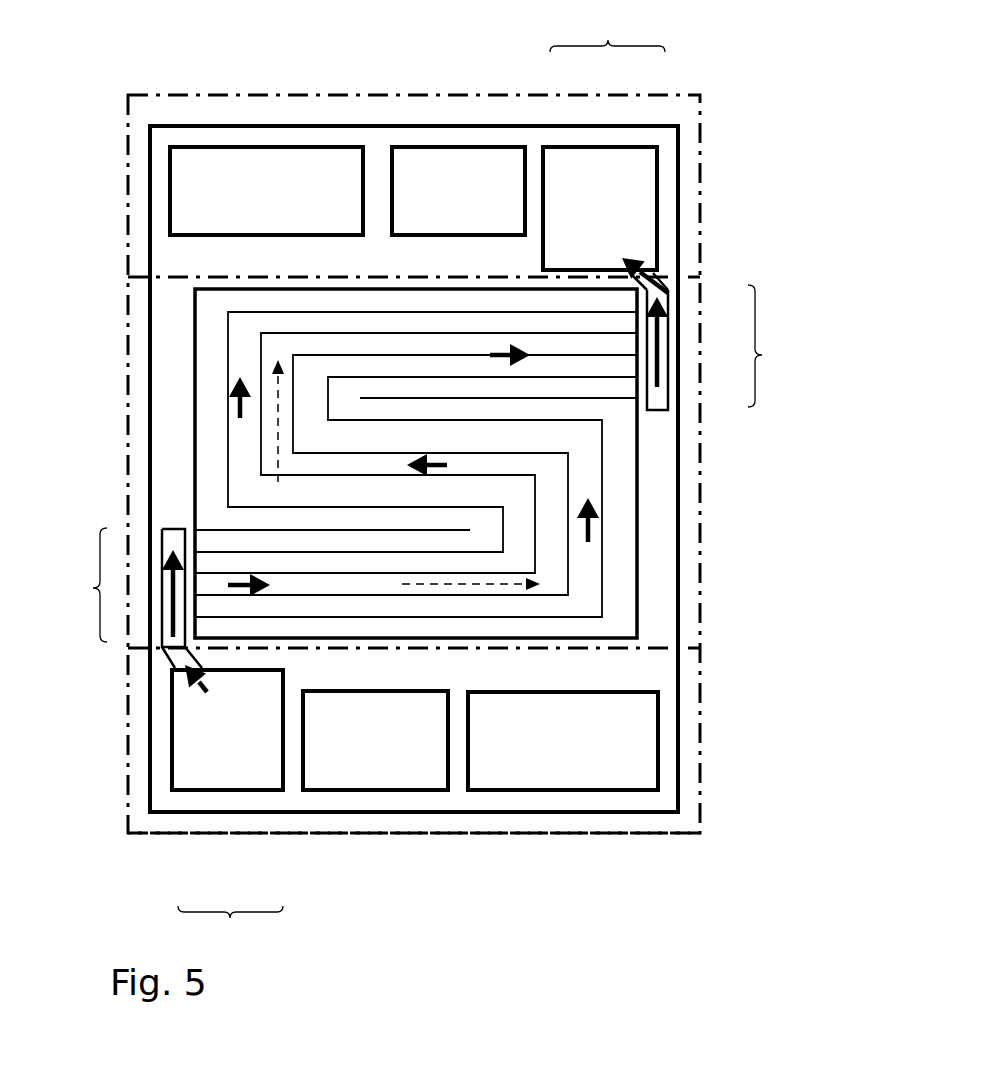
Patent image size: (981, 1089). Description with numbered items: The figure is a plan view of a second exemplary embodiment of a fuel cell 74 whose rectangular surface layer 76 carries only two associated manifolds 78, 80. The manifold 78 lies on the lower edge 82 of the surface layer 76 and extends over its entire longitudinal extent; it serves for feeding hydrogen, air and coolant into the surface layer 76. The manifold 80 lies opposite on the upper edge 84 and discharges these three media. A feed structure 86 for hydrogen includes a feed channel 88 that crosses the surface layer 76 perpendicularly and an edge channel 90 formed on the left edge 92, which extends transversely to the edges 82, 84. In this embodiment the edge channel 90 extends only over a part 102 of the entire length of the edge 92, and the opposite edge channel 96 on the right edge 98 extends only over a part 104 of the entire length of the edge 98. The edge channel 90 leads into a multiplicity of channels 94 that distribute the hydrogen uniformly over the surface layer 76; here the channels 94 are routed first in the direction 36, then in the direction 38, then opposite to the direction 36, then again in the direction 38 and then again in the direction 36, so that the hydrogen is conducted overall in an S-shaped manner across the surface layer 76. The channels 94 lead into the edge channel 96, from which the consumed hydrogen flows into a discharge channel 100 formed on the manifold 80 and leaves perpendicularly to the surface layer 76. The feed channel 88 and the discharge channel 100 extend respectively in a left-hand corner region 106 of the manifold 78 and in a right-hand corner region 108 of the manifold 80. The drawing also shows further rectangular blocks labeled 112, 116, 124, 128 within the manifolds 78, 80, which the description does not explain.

The fuel cell 74 is at (80, 103).
The surface layer 76 is at (128, 369).
The manifold 78 is at (390, 840).
The manifold 80 is at (425, 95).
The lower edge 82 is at (624, 648).
The upper edge 84 is at (215, 288).
The feed structure 86 is at (158, 700).
The feed channel 88 is at (212, 757).
The edge channel 90 is at (168, 540).
The edge 92 is at (150, 440).
The channels 94 is at (242, 438).
The edge channel 96 is at (652, 395).
The edge 98 is at (680, 453).
The discharge channel 100 is at (580, 224).
The part of the entire length of the edge 102 is at (75, 585).
The part of the entire length of the edge 104 is at (780, 346).
The left-hand corner region 106 is at (230, 929).
The right-hand corner region 108 is at (607, 28).
The electronic component 112 is at (545, 756).
The electronic component 116 is at (250, 206).
The electronic component 124 is at (357, 757).
The electronic component 128 is at (437, 206).
The direction 36 is at (478, 588).
The direction 38 is at (278, 410).